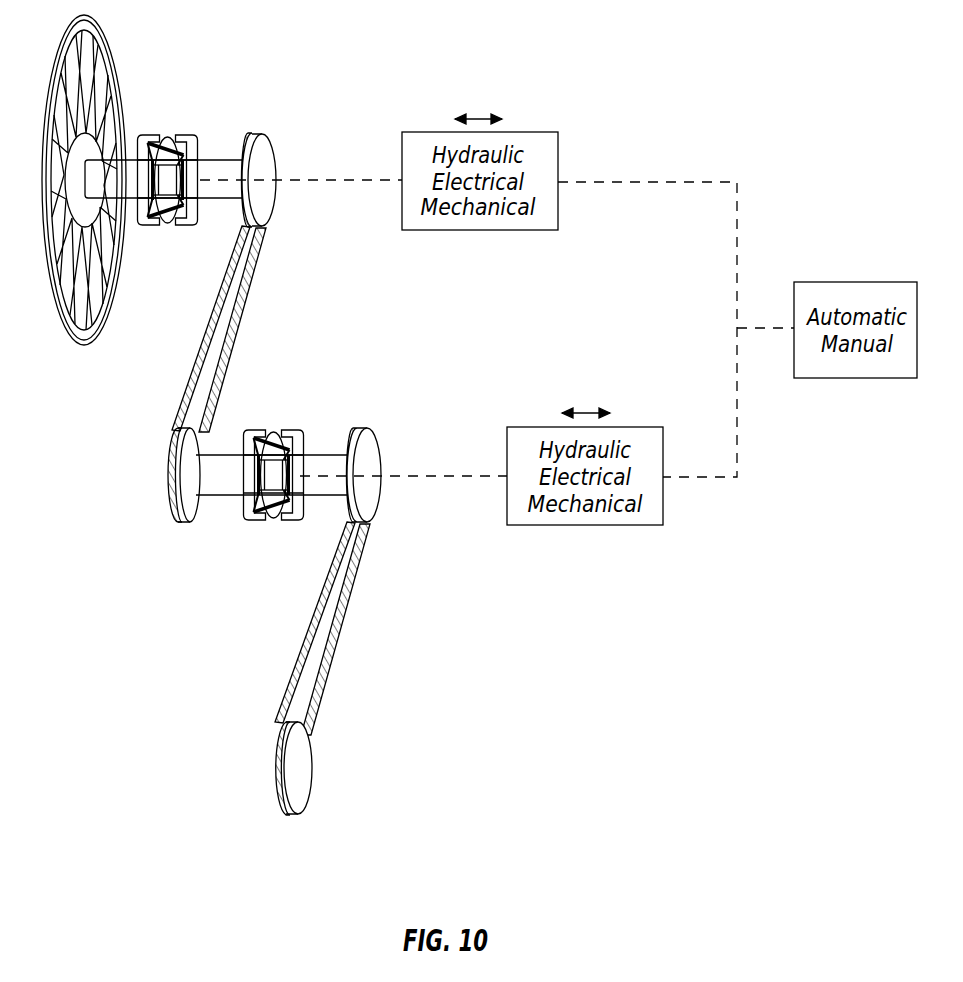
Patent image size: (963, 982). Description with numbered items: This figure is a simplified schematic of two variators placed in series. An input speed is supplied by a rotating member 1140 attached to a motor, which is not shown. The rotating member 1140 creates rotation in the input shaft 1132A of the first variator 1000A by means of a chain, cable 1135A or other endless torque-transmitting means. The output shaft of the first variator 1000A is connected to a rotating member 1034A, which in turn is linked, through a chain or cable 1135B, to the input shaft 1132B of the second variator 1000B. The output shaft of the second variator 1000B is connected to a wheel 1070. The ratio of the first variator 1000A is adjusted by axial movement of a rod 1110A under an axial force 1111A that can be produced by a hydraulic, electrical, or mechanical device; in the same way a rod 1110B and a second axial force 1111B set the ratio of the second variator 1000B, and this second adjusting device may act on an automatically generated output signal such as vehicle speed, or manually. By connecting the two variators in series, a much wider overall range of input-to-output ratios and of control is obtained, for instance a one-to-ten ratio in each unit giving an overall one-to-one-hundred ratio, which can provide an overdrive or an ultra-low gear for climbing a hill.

The wheel 1070 is at (85, 342).
The second variator 1000B is at (179, 134).
The input shaft 1132B is at (270, 144).
The rod 1110B is at (290, 183).
The second axial force 1111B is at (480, 117).
The cable 1135B is at (236, 319).
The rotating member 1034A is at (168, 471).
The first variator 1000A is at (284, 432).
The input shaft 1132A is at (381, 440).
The rod 1110A is at (397, 478).
The axial force 1111A is at (589, 411).
The cable 1135A is at (341, 608).
The rotating member 1140 is at (300, 767).